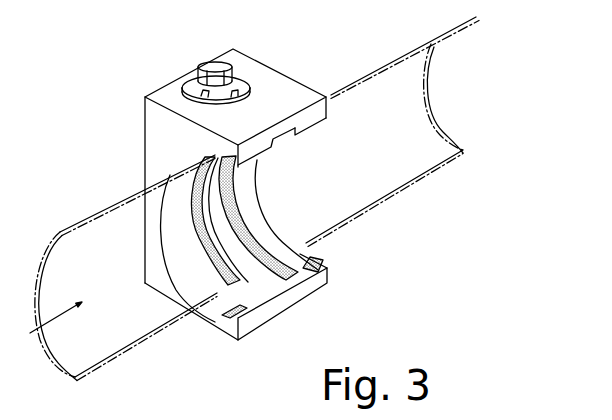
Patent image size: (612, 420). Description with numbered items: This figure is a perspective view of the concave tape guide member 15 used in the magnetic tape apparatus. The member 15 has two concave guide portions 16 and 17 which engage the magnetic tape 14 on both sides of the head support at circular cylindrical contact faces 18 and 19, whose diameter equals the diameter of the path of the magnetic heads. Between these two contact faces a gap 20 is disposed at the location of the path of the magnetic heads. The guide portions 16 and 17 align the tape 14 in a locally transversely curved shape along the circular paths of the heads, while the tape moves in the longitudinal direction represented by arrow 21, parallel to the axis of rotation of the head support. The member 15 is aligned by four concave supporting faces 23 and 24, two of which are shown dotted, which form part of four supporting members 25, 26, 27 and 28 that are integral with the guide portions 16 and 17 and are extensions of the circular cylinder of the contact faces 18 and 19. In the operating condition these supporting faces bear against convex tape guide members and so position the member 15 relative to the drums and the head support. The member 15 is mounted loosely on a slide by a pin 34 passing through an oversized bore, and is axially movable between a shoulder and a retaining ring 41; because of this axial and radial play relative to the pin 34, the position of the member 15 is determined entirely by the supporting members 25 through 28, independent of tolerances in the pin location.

The magnetic tape 14 is at (446, 117).
The concave tape guide member 15 is at (275, 90).
The concave guide portion 16 is at (200, 260).
The concave guide portion 17 is at (254, 208).
The contact face 18 is at (208, 222).
The contact face 19 is at (236, 189).
The gap 20 is at (230, 247).
The arrow 21 is at (47, 327).
The concave supporting face 23 is at (229, 318).
The concave supporting face 24 is at (326, 262).
The supporting member 25 is at (268, 307).
The supporting member 26 is at (313, 283).
The supporting member 27 is at (265, 153).
The supporting member 28 is at (323, 123).
The pin 34 is at (213, 66).
The retaining ring 41 is at (192, 82).